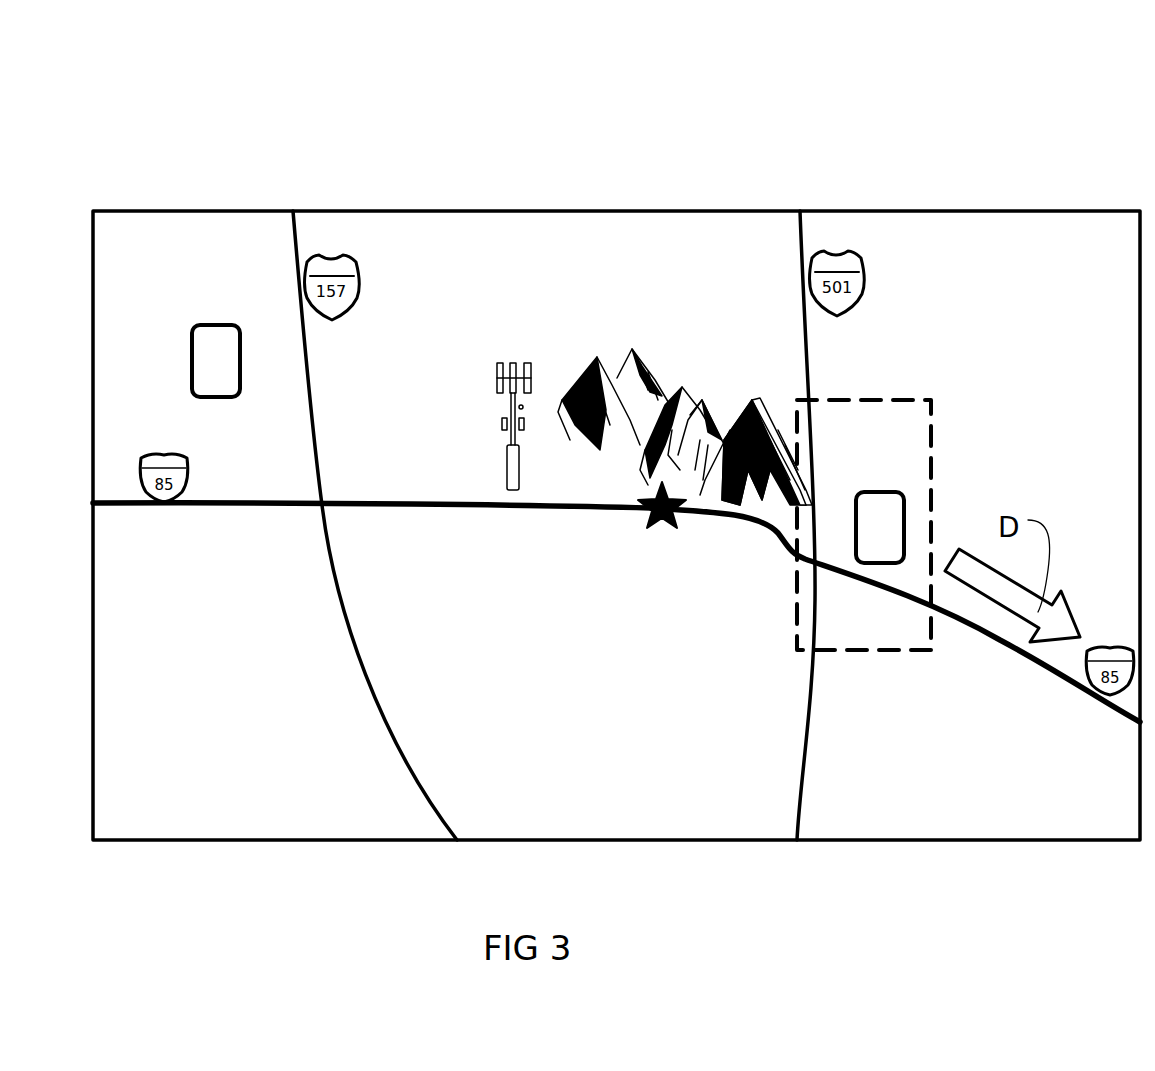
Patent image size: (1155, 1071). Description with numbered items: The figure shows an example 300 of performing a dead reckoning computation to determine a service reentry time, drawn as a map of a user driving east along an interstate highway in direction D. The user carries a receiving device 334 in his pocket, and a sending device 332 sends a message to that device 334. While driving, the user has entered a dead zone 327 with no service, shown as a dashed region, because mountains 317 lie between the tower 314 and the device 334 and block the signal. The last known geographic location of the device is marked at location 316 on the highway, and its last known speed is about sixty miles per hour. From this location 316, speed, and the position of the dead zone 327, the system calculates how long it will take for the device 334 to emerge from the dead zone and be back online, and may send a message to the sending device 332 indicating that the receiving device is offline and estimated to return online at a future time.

The example of performing a dead reckoning computation 300 is at (132, 105).
The tower 314 is at (521, 373).
The location 316 is at (658, 528).
The mountains 317 is at (750, 402).
The dead zone 327 is at (912, 400).
The sending device 332 is at (223, 337).
The device 334 is at (890, 508).